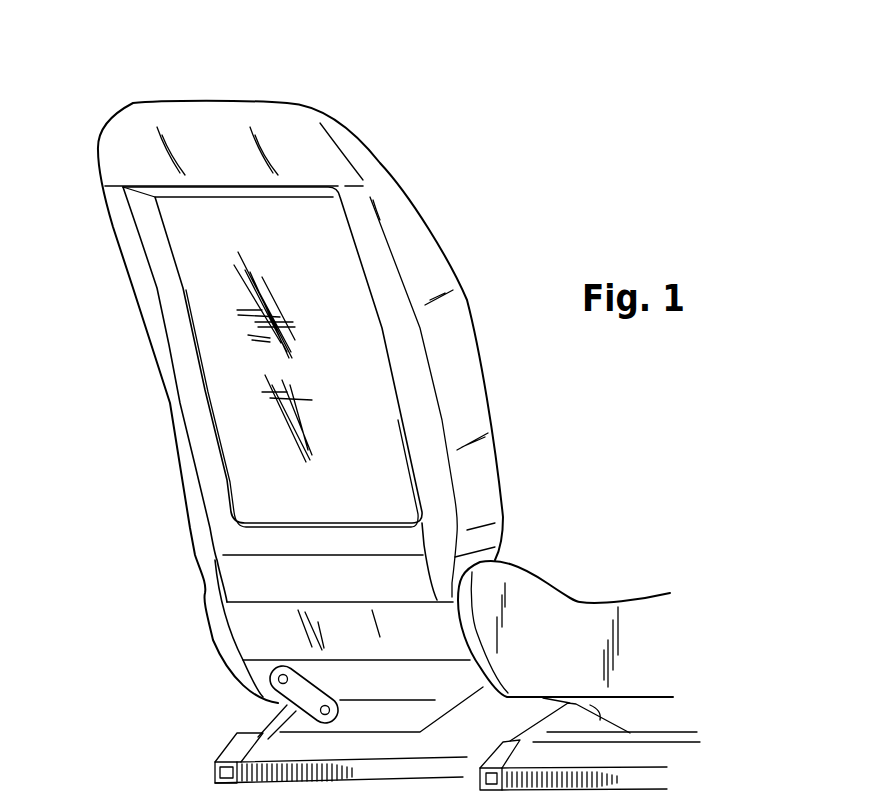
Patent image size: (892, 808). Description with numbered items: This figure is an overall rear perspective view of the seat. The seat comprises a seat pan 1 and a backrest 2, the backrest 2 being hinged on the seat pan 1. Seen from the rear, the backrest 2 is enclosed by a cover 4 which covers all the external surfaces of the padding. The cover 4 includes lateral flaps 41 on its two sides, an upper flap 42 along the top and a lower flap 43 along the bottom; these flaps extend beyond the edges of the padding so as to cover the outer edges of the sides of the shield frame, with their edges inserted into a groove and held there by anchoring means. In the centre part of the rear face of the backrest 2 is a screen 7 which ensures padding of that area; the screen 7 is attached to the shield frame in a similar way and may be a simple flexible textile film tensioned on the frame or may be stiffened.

The seat pan 1 is at (550, 622).
The backrest 2 is at (462, 385).
The cover 4 is at (423, 237).
The lateral flaps 41 is at (192, 382).
The upper flap 42 is at (230, 192).
The lower flap 43 is at (277, 580).
The screen 7 is at (262, 470).